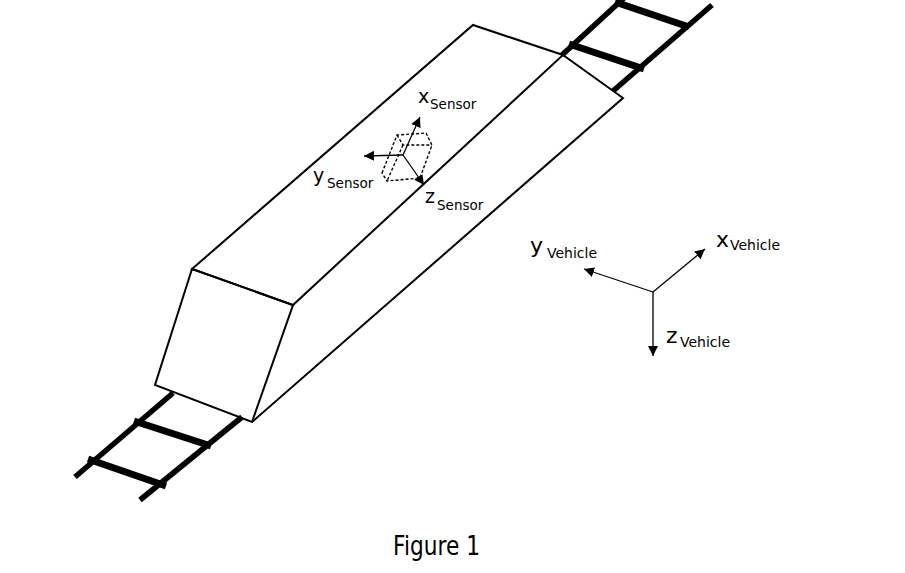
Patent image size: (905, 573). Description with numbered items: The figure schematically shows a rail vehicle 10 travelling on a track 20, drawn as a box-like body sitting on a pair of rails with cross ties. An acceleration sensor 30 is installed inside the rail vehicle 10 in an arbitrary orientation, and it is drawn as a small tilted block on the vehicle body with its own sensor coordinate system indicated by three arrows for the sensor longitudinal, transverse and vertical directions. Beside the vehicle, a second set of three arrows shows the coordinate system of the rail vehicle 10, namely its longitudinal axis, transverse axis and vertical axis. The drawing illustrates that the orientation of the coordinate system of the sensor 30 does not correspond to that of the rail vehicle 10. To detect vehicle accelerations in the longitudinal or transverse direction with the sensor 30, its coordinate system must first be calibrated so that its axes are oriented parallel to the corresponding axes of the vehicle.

The rail vehicle 10 is at (243, 228).
The track 20 is at (155, 405).
The acceleration sensor 30 is at (395, 141).